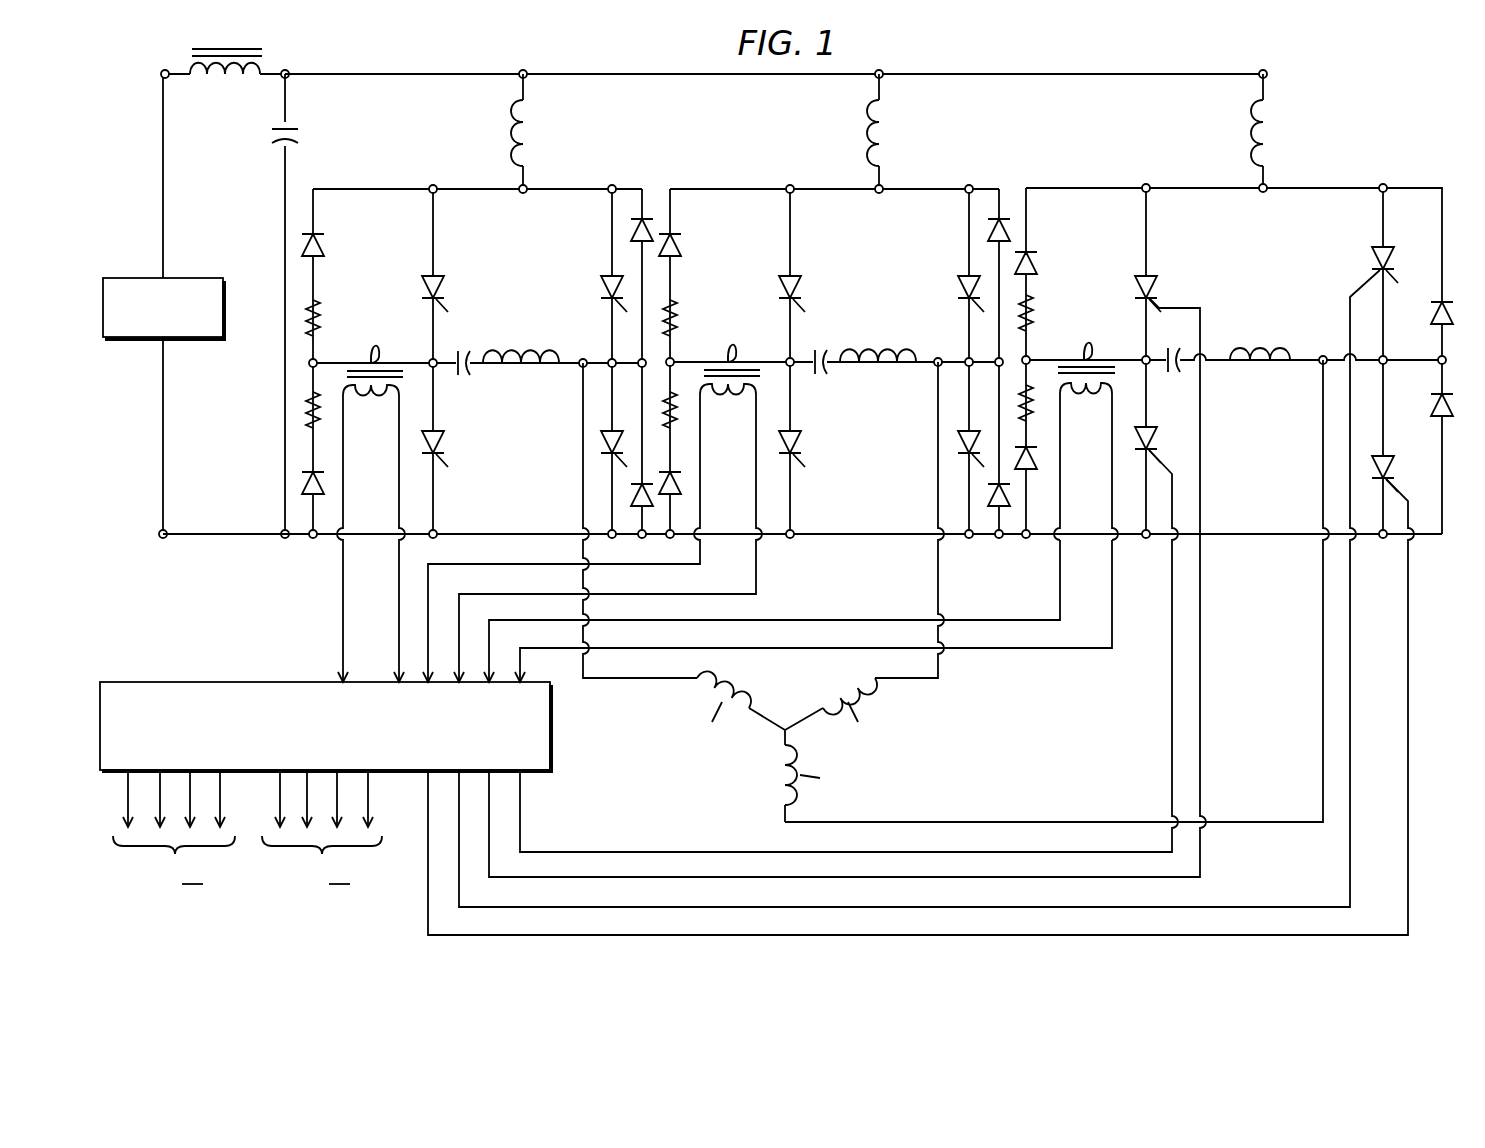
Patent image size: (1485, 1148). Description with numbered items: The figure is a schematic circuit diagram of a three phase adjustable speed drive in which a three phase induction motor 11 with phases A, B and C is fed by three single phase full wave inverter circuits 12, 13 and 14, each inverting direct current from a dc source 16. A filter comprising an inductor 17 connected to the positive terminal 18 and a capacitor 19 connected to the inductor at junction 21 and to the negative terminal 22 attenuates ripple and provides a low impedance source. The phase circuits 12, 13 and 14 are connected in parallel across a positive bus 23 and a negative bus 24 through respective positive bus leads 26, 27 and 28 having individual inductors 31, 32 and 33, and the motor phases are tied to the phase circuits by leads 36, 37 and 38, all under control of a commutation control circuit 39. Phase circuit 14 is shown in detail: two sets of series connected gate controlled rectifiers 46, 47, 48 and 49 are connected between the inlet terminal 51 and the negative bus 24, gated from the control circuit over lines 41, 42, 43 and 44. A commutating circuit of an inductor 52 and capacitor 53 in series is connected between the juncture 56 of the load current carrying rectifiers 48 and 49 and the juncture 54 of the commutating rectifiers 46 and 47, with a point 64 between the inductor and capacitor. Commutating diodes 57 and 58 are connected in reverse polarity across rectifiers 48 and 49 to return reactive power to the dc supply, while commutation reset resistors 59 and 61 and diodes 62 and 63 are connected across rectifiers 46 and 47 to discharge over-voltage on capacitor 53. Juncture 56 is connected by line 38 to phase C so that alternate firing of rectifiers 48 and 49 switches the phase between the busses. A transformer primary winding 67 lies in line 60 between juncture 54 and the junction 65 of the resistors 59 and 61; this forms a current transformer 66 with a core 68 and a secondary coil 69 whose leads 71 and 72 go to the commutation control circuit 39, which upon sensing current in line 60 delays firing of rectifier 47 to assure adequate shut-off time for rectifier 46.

The three phase induction motor 11 is at (732, 756).
The single phase full wave inverter circuit 12 is at (489, 172).
The single phase full wave inverter circuit 13 is at (841, 172).
The single phase full wave inverter circuit 14 is at (971, 423).
The dc source 16 is at (190, 340).
The inductor 17 is at (262, 66).
The positive terminal 18 is at (168, 82).
The capacitor 19 is at (278, 150).
The junction 21 is at (292, 80).
The negative terminal 22 is at (170, 531).
The positive bus 23 is at (408, 80).
The negative bus 24 is at (288, 540).
The positive bus lead 26 is at (530, 78).
The positive bus lead 27 is at (886, 78).
The positive bus lead 28 is at (1270, 80).
The inductor 31 is at (532, 135).
The inductor 32 is at (886, 135).
The inductor 33 is at (1270, 135).
The lead 36 is at (578, 497).
The lead 37 is at (930, 498).
The lead 38 is at (1320, 478).
The commutation control circuit 39 is at (183, 680).
The gating line 41 is at (1203, 712).
The gating line 42 is at (1170, 710).
The gating line 43 is at (1352, 677).
The gating line 44 is at (1406, 735).
The commutating gate controlled rectifier 46 is at (1155, 283).
The commutating gate controlled rectifier 47 is at (1152, 440).
The load current carrying gate controlled rectifier 48 is at (1372, 257).
The load current carrying gate controlled rectifier 49 is at (1388, 460).
The inlet terminal 51 is at (1270, 190).
The inductor 52 is at (1265, 370).
The capacitor 53 is at (1183, 365).
The juncture 54 is at (1143, 356).
The juncture 56 is at (1388, 360).
The commutating diode 57 is at (1432, 310).
The commutating diode 58 is at (1432, 406).
The commutation reset resistor 59 is at (1032, 312).
The line 60 is at (1090, 348).
The commutation reset resistor 61 is at (1032, 405).
The diode 62 is at (1040, 260).
The diode 63 is at (1040, 460).
The point 64 is at (1225, 355).
The junction 65 is at (1032, 355).
The current transformer 66 is at (1118, 396).
The primary coil 67 is at (1094, 345).
The core 68 is at (1046, 360).
The secondary coil 69 is at (1100, 400).
The lead 71 is at (992, 618).
The lead 72 is at (1068, 652).